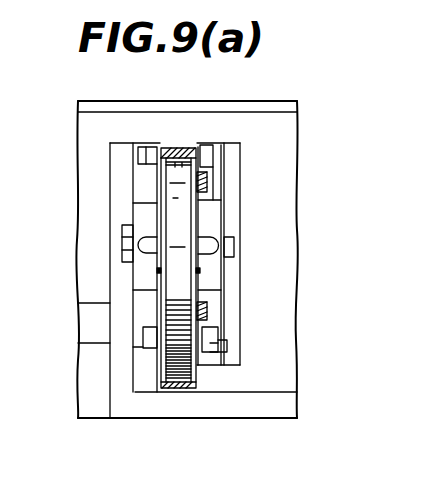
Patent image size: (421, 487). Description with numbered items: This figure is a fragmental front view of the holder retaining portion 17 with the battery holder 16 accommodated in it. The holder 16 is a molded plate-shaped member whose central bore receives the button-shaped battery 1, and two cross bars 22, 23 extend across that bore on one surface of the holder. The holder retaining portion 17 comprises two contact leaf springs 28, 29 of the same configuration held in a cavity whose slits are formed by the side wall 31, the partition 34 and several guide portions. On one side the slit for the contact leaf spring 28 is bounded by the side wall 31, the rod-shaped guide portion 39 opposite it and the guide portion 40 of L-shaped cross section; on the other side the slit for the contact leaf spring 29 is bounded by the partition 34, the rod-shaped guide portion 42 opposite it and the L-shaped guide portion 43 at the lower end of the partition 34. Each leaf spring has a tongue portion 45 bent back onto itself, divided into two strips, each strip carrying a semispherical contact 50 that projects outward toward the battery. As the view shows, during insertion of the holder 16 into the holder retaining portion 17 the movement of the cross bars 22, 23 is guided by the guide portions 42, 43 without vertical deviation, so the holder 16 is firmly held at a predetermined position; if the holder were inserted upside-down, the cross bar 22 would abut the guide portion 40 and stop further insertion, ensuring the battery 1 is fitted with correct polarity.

The button-shaped battery 1 is at (176, 148).
The holder 16 is at (181, 388).
The holder retaining portion 17 is at (262, 262).
The cross bar 22 is at (207, 182).
The cross bar 23 is at (207, 313).
The contact leaf spring 28 is at (133, 189).
The contact leaf spring 29 is at (224, 199).
The side wall 31 is at (118, 365).
The partition 34 is at (233, 345).
The rod-shaped guide portion 39 is at (150, 158).
The guide portion 40 is at (150, 357).
The rod-shaped guide portion 42 is at (206, 148).
The guide portion 43 is at (223, 354).
The tongue portion 45 is at (143, 217).
The semispherical contact 50 is at (157, 271).